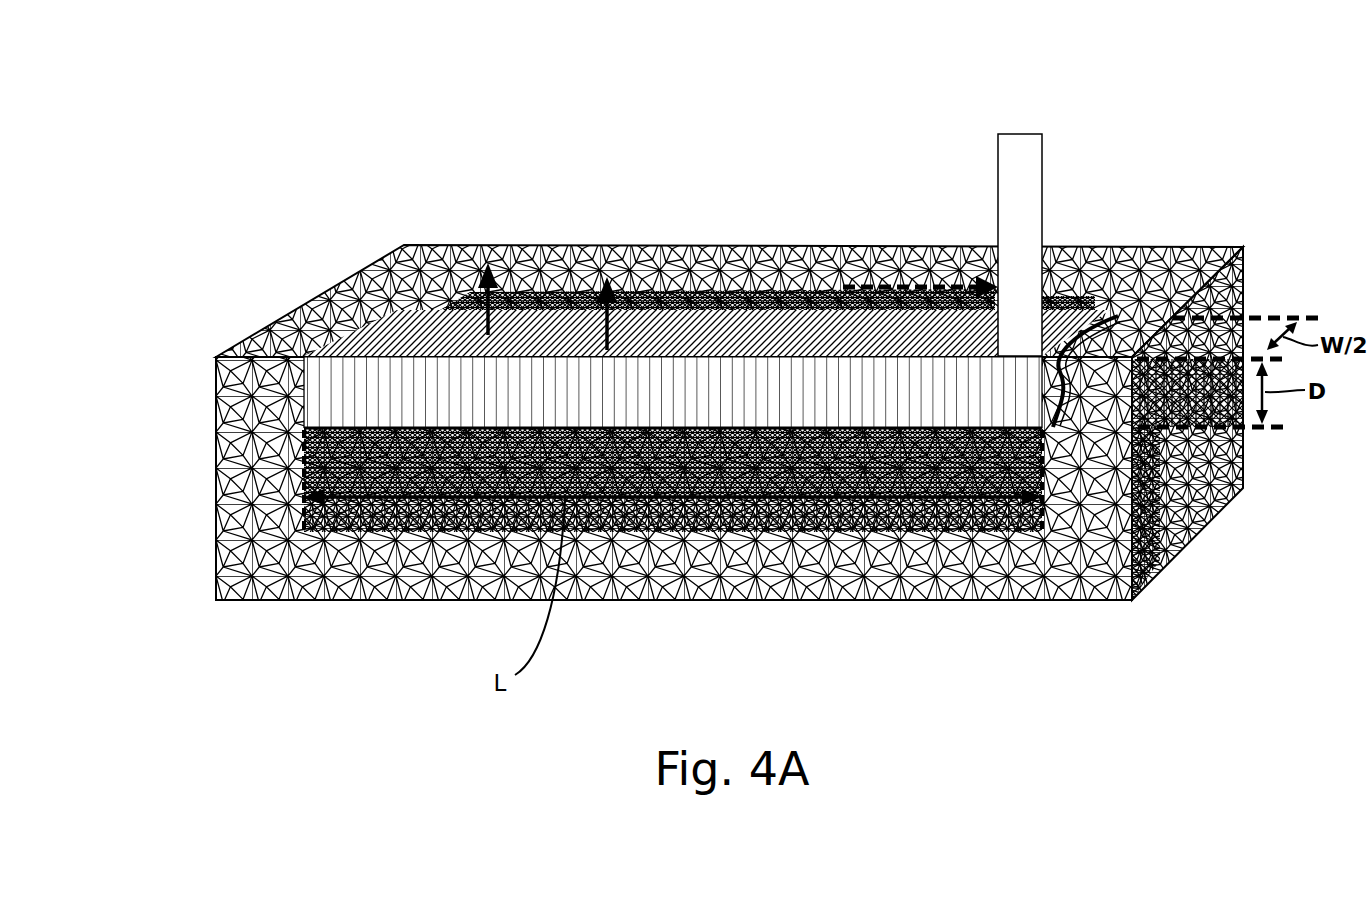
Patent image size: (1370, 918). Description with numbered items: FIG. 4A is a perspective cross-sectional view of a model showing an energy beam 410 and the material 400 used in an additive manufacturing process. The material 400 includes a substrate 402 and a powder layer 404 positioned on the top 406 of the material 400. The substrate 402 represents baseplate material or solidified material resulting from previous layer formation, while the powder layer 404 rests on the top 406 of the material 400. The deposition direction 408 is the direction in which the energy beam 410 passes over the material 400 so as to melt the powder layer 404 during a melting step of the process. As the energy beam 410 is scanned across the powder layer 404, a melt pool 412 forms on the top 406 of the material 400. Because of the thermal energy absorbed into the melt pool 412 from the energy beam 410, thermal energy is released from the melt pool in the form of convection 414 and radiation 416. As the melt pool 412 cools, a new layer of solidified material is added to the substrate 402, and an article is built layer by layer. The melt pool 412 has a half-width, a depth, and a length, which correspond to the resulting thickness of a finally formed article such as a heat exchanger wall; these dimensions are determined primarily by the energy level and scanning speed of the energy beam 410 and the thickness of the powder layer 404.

The material 400 is at (306, 86).
The substrate 402 is at (216, 520).
The powder layer 404 is at (209, 357).
The top 406 is at (262, 338).
The deposition direction 408 is at (898, 285).
The energy beam 410 is at (1043, 173).
The melt pool 412 is at (1160, 433).
The convection 414 is at (600, 330).
The radiation 416 is at (482, 328).